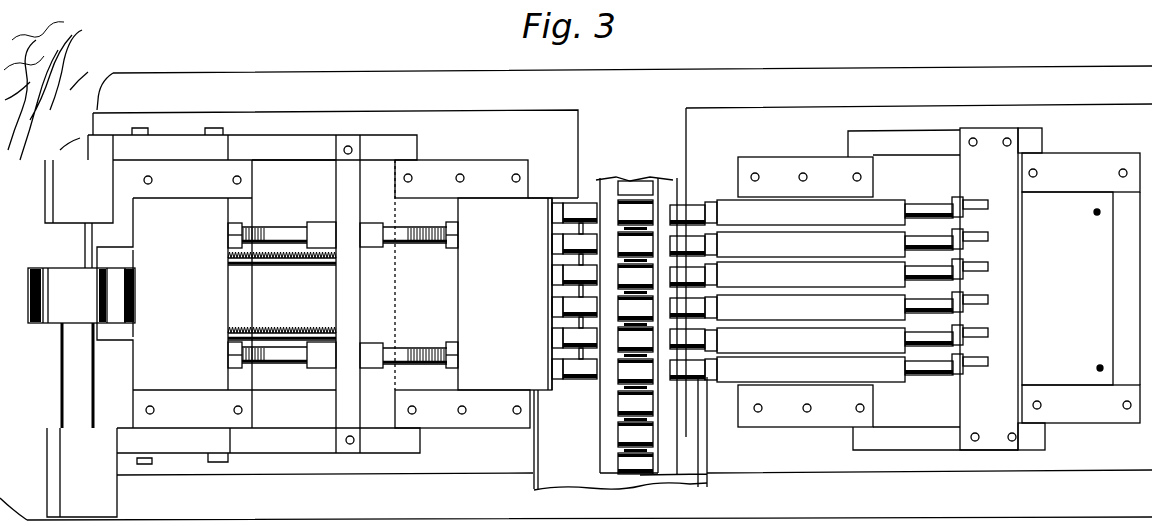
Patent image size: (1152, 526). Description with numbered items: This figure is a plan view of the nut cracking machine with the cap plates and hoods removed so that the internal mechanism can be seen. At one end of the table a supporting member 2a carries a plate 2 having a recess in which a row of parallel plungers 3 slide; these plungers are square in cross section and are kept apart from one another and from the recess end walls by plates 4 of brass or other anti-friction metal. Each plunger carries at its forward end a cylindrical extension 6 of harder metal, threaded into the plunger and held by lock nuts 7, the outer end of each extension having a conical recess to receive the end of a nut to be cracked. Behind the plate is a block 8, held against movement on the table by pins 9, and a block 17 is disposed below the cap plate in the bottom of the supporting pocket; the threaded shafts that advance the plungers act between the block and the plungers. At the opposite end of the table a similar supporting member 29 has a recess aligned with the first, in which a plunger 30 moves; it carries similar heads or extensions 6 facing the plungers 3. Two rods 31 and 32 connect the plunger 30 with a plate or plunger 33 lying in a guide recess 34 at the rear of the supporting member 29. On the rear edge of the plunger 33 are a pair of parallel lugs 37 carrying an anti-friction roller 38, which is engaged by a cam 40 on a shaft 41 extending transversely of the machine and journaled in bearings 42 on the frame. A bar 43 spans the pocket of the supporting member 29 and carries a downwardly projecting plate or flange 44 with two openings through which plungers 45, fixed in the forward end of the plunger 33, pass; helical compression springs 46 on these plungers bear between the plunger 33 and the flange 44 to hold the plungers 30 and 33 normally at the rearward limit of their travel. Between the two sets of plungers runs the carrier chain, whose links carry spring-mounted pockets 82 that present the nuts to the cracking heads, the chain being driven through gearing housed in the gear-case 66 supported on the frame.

The plate 2 is at (827, 413).
The supporting member 2a is at (1113, 424).
The plungers 3 is at (852, 289).
The plates of anti-friction metal 4 is at (876, 233).
The cylindrical extensions 6 is at (586, 208).
The lock nuts 7 is at (556, 205).
The block 8 is at (1081, 288).
The pins 9 is at (1094, 214).
The block 17 is at (1012, 366).
The supporting member 29 is at (252, 397).
The plunger 30 is at (505, 294).
The rod 31 is at (399, 352).
The rod 32 is at (403, 250).
The plate or plunger 33 is at (197, 294).
The guide recess 34 is at (247, 200).
The lugs 37 is at (118, 250).
The anti-friction roller 38 is at (136, 302).
The cam 40 is at (70, 330).
The shaft 41 is at (65, 400).
The bearings 42 is at (125, 135).
The bar 43 is at (356, 322).
The plate or flange 44 is at (333, 350).
The plungers 45 is at (300, 325).
The helical compression springs 46 is at (250, 283).
The gear-case 66 is at (537, 455).
The pocket 82 is at (655, 438).